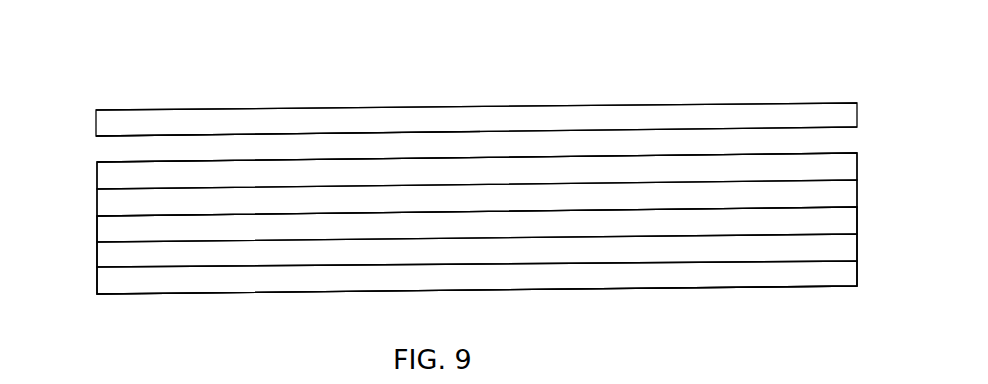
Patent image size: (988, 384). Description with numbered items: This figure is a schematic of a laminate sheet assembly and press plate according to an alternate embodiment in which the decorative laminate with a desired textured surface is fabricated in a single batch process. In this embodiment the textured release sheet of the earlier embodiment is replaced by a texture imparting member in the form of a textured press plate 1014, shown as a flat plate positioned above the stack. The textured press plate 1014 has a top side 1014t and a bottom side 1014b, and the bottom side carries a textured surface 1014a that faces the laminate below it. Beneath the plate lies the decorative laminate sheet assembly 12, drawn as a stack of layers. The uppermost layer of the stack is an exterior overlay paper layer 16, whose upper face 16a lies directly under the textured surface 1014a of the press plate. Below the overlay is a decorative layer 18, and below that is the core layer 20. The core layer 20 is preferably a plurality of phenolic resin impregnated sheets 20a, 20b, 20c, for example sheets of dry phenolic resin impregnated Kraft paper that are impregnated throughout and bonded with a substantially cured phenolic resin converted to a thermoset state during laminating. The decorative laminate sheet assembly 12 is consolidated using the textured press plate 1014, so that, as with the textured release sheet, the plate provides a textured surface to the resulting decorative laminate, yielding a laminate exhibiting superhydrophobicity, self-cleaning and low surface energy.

The textured press plate 1014 is at (319, 107).
The top side 1014t is at (206, 109).
The textured surface 1014a is at (124, 136).
The bottom side 1014b is at (158, 136).
The decorative laminate sheet assembly 12 is at (273, 292).
The exterior overlay paper layer 16 is at (858, 168).
The top surface of top layer 16a is at (837, 153).
The decorative layer 18 is at (858, 190).
The core layer 20 is at (443, 250).
The phenolic resin impregnated sheet 20a is at (858, 218).
The phenolic resin impregnated sheet 20b is at (858, 245).
The phenolic resin impregnated sheet 20c is at (858, 273).